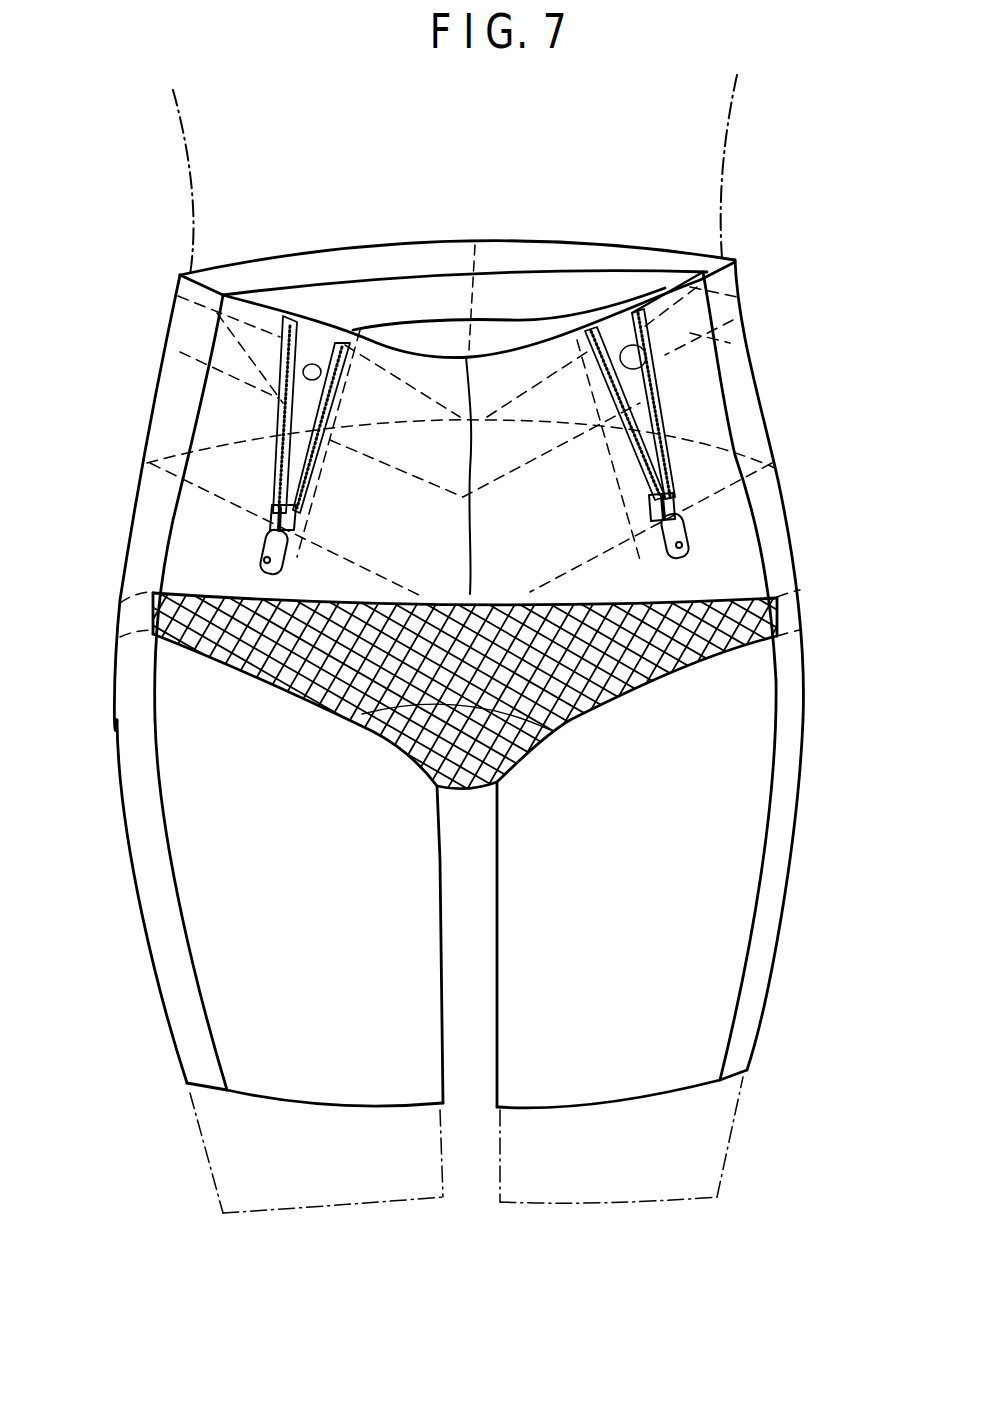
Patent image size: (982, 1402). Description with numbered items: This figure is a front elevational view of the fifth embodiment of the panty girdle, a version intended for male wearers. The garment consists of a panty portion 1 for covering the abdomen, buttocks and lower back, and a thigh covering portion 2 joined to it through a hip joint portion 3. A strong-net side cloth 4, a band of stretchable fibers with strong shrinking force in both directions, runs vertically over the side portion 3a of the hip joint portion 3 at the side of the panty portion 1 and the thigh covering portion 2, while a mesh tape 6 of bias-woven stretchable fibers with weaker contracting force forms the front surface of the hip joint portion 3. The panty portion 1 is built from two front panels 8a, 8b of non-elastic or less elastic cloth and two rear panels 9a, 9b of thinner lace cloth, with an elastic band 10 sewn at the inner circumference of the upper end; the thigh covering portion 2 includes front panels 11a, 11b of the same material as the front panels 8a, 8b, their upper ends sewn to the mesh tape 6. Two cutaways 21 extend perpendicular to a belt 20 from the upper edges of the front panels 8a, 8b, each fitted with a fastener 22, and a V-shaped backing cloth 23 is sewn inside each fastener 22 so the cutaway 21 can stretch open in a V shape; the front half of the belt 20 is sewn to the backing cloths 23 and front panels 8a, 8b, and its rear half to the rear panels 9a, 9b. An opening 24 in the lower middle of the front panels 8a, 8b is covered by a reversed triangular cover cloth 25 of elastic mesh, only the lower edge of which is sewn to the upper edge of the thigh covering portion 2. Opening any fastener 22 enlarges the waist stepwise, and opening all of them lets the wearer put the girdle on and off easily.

The panty portion 1 is at (838, 255).
The thigh covering portion 2 is at (838, 653).
The hip joint portion 3 is at (840, 595).
The side portion 3a is at (113, 687).
The strong-net side cloth 4 is at (120, 570).
The mesh tape 6 is at (172, 720).
The front panel 8a is at (733, 587).
The front panel 8b is at (153, 622).
The rear panel 9a is at (620, 290).
The rear panel 9b is at (365, 300).
The elastic band 10 is at (510, 257).
The front panel 11a is at (623, 1067).
The front panel 11b is at (320, 1077).
The belt 20 is at (590, 293).
The cutaway 21 is at (280, 343).
The fastener 22 is at (245, 420).
The V-shaped backing cloth 23 is at (327, 307).
The opening 24 is at (385, 705).
The cover cloth 25 is at (247, 600).